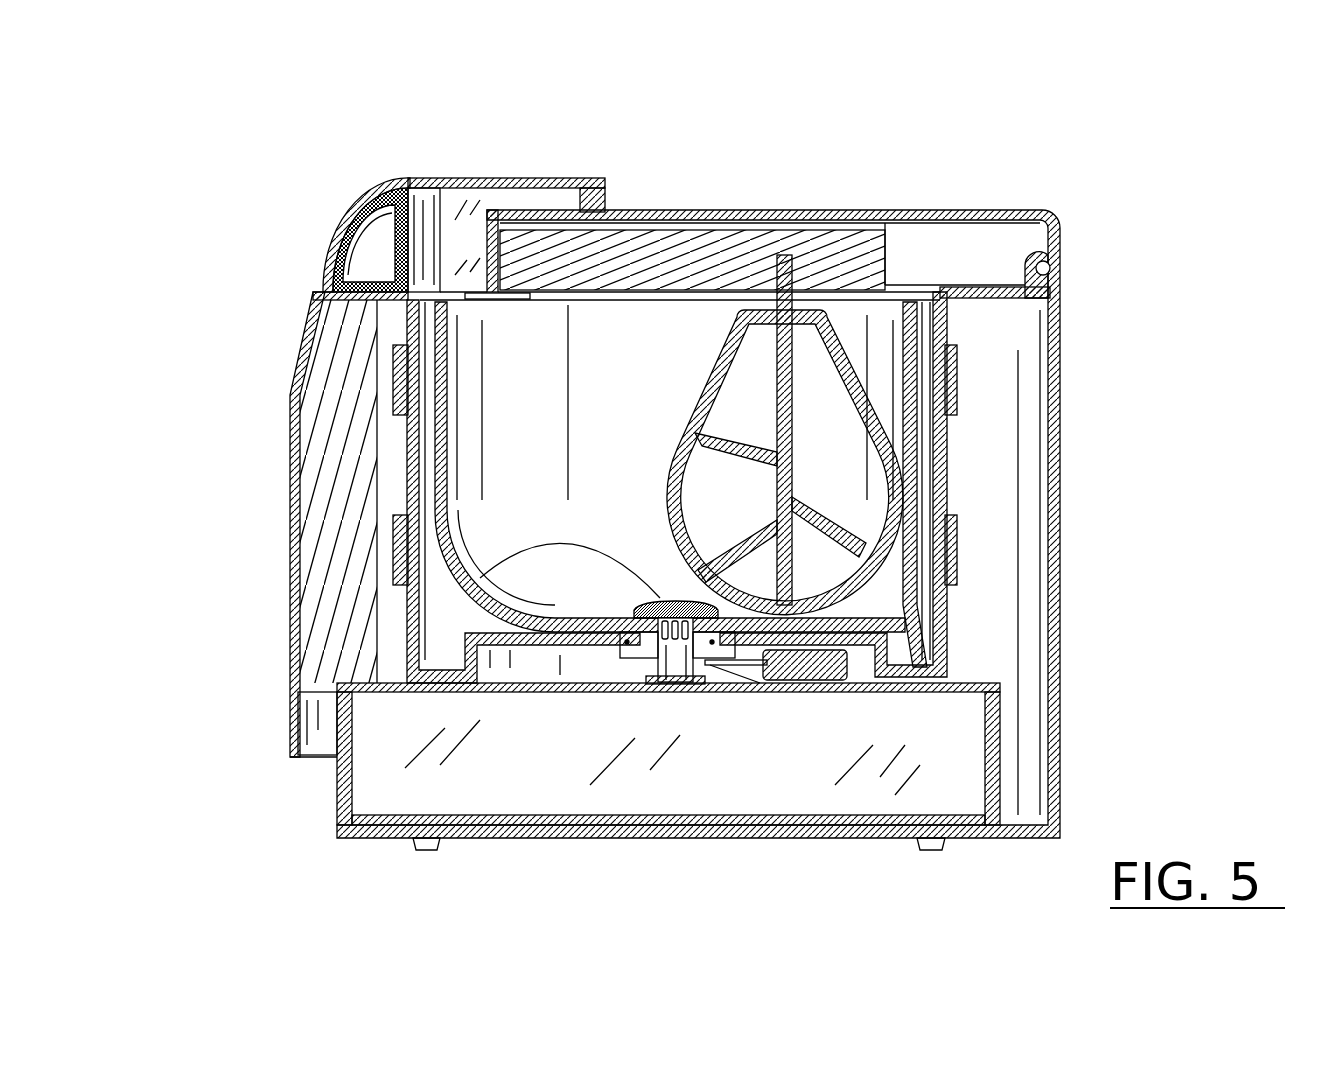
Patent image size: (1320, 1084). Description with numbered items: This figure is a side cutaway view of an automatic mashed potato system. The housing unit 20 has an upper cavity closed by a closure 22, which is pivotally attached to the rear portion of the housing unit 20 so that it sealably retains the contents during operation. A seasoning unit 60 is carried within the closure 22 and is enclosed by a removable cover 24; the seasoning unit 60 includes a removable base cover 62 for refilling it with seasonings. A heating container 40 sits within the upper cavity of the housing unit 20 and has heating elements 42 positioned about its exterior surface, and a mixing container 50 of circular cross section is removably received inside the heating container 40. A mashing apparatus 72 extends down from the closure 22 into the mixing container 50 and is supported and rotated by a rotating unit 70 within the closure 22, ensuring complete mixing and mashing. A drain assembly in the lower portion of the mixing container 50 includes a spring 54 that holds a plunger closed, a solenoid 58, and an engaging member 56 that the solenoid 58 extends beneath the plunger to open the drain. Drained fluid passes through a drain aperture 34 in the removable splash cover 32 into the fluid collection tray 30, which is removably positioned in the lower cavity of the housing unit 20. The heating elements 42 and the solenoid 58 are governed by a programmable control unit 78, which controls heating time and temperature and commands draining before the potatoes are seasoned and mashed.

The housing unit 20 is at (1060, 500).
The closure 22 is at (983, 207).
The removable cover 24 is at (535, 178).
The fluid collection tray 30 is at (337, 775).
The removable splash cover 32 is at (562, 692).
The drain aperture 34 is at (715, 660).
The heating container 40 is at (953, 323).
The heating elements 42 is at (393, 388).
The mixing container 50 is at (915, 535).
The spring 54 is at (655, 605).
The engaging member 56 is at (930, 845).
The solenoid 58 is at (735, 667).
The seasoning unit 60 is at (410, 188).
The removable base cover 62 is at (325, 270).
The rotating unit 70 is at (705, 250).
The mashing apparatus 72 is at (835, 330).
The control unit 78 is at (335, 490).